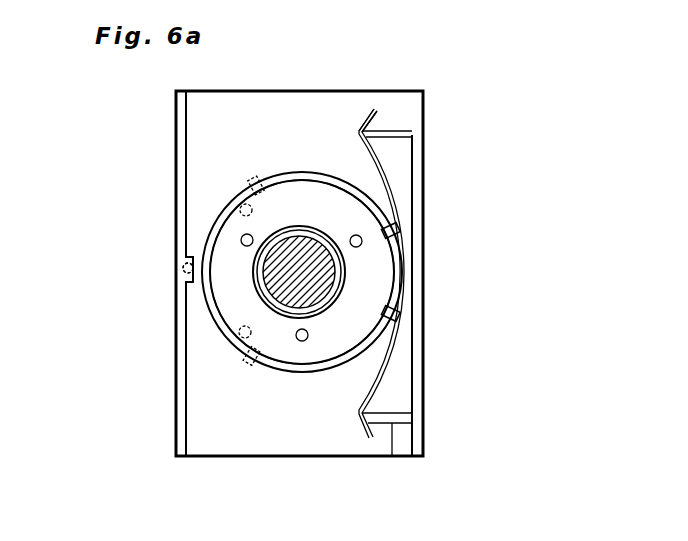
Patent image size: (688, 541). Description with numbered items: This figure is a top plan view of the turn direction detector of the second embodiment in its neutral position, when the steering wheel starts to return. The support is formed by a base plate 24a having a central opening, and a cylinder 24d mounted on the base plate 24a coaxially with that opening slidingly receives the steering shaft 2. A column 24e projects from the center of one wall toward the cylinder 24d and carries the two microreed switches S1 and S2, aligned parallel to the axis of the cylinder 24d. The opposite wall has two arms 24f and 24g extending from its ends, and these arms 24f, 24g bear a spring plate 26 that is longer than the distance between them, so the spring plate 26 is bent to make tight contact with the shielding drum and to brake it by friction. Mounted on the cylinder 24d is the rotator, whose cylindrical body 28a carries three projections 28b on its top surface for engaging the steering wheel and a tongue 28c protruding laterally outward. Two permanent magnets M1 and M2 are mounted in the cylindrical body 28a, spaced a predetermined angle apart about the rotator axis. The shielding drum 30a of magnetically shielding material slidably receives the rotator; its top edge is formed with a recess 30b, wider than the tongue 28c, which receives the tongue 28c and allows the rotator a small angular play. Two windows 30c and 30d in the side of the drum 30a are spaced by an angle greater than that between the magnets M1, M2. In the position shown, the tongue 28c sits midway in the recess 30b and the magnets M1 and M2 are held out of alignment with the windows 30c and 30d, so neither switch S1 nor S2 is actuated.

The steering shaft 2 is at (288, 287).
The base plate 24a is at (232, 437).
The cylinder 24d is at (347, 282).
The column 24e is at (192, 287).
The arm 24f is at (392, 456).
The arm 24g is at (395, 123).
The spring plate 26 is at (390, 365).
The cylindrical body 28a is at (347, 203).
The projections 28b is at (352, 237).
The tongue 28c is at (395, 253).
The drum 30a is at (333, 371).
The recess 30b is at (386, 308).
The window 30c is at (252, 358).
The window 30d is at (252, 180).
The permanent magnet M1 is at (240, 336).
The permanent magnet M2 is at (240, 211).
The microreed switch S1 is at (183, 268).
The microreed switch S2 is at (139, 282).